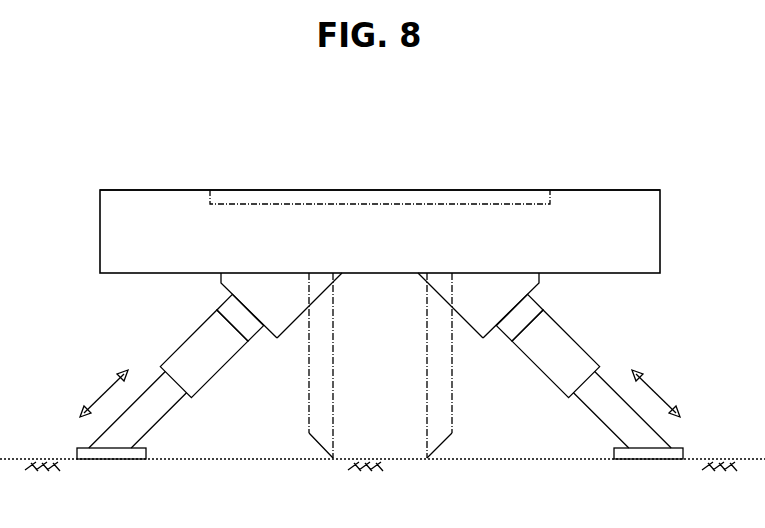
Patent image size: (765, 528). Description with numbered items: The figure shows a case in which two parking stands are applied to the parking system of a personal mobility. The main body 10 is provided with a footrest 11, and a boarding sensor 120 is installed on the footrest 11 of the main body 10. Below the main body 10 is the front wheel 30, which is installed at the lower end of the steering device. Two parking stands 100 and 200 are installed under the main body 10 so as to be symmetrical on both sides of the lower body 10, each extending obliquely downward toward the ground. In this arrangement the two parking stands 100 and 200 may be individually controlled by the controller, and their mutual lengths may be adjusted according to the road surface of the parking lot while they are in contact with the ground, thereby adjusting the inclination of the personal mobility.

The main body 10 is at (113, 238).
The footrest 11 is at (153, 190).
The boarding sensor 120 is at (470, 203).
The front wheel 30 is at (442, 420).
The parking stand 100 is at (170, 348).
The parking stand 200 is at (590, 348).